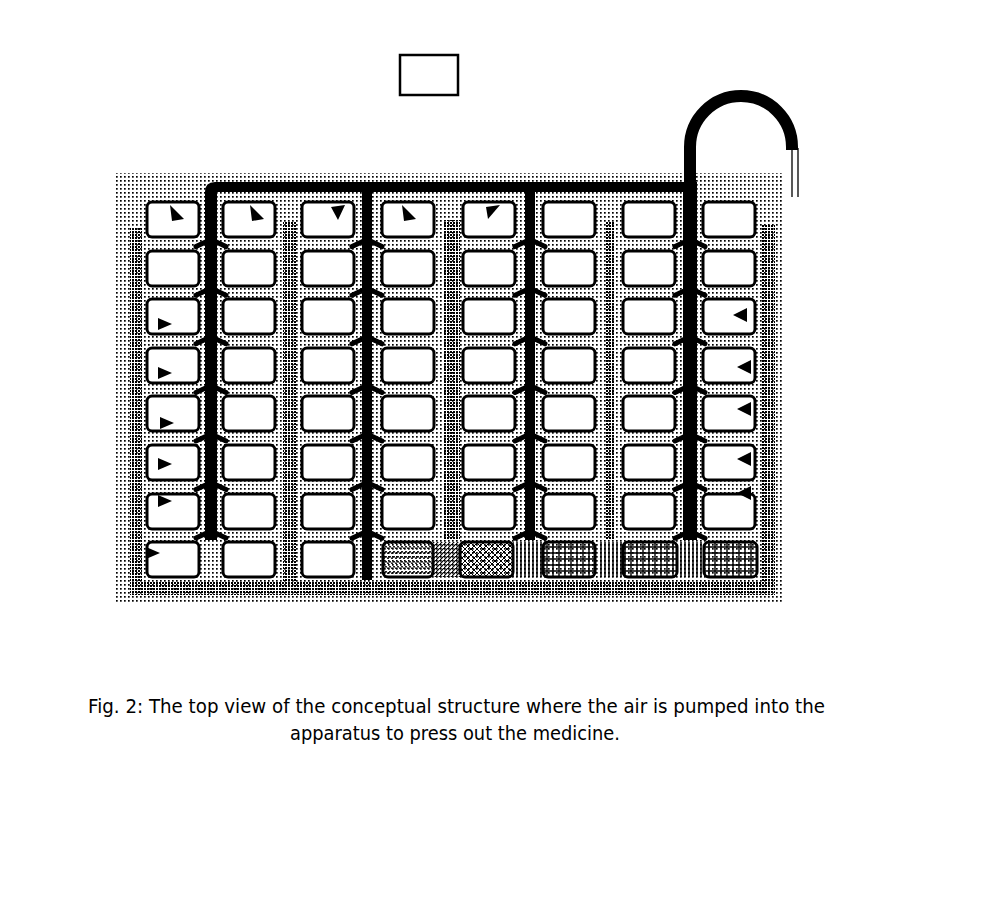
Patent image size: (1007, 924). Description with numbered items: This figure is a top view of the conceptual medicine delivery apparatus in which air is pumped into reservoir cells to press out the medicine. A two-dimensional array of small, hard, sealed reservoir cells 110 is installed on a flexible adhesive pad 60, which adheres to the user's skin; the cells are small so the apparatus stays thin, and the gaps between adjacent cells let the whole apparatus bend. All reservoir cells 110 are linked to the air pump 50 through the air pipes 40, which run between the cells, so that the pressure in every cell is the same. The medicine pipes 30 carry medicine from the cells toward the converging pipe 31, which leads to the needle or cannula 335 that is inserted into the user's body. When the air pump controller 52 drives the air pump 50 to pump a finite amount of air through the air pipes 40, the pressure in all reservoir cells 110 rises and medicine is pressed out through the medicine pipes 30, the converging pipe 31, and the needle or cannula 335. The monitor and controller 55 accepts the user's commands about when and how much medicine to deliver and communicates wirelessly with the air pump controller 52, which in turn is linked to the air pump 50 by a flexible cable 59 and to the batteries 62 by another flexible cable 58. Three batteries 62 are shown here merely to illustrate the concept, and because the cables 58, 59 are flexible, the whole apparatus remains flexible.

The medicine pipes 30 is at (530, 182).
The converging pipe 31 is at (770, 97).
The needle or cannula 335 is at (808, 177).
The air pipes 40 is at (128, 282).
The air pump 50 is at (392, 582).
The air pump controller 52 is at (492, 582).
The monitor and controller 55 is at (462, 83).
The flexible cable 58 is at (607, 582).
The flexible cable 59 is at (442, 582).
The flexible adhesive pad 60 is at (152, 188).
The batteries 62 is at (600, 584).
The reservoir cells 110 is at (492, 212).